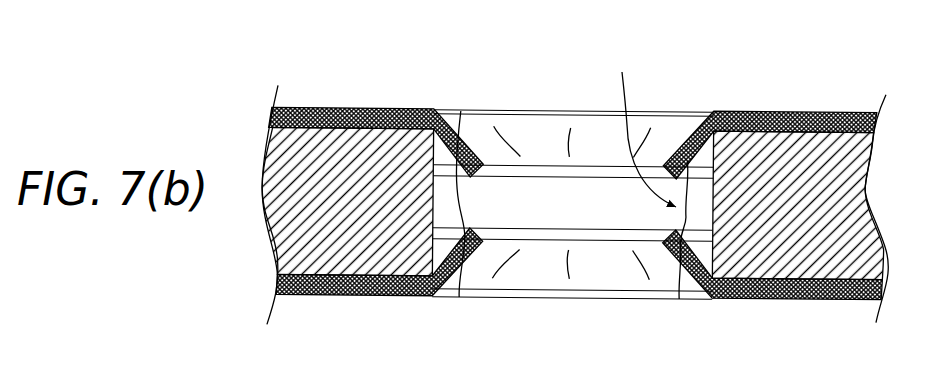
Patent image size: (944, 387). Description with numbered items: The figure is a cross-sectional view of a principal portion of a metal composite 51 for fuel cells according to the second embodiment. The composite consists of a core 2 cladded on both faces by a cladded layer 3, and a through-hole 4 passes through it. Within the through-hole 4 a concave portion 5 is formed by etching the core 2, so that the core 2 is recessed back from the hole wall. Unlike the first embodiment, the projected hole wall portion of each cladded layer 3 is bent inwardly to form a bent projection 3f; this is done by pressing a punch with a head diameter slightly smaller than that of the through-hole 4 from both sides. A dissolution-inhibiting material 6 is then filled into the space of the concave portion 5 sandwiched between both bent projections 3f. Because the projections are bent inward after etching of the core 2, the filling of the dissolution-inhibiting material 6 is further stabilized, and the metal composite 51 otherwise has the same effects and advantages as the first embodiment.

The metal composite 51 is at (840, 75).
The cladded layer 3 is at (342, 109).
The core 2 is at (770, 273).
The bent projection 3f is at (460, 120).
The through-hole 4 is at (584, 217).
The concave portion 5 is at (644, 129).
The dissolution-inhibiting material 6 is at (680, 298).